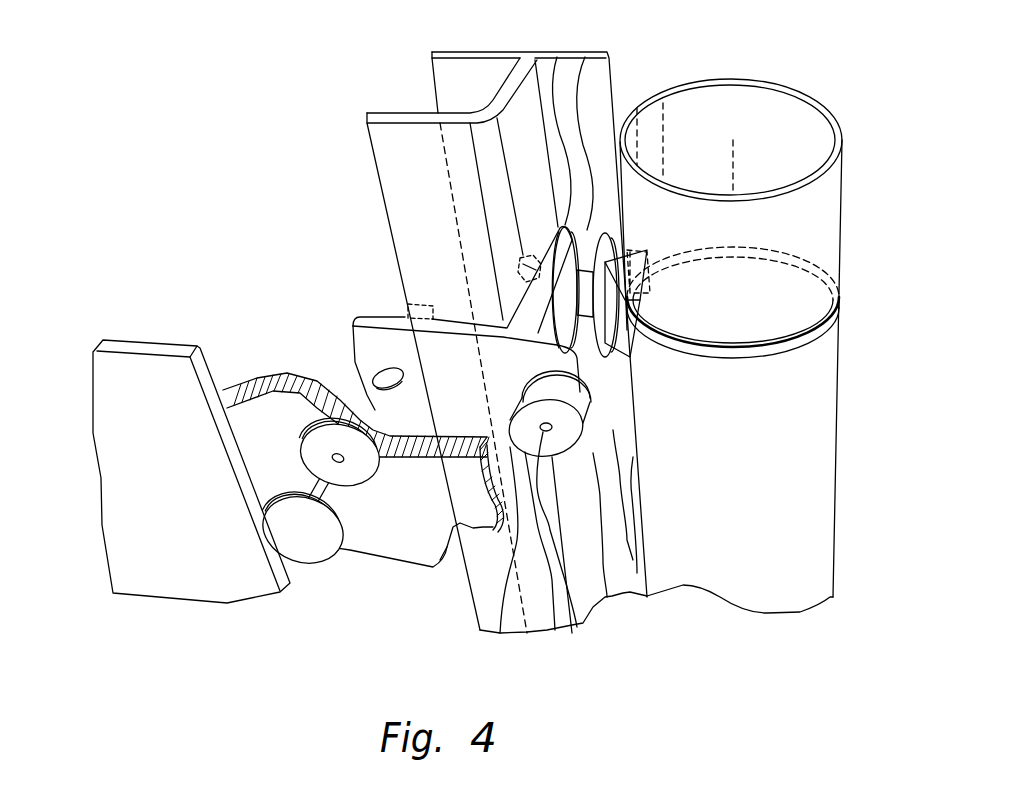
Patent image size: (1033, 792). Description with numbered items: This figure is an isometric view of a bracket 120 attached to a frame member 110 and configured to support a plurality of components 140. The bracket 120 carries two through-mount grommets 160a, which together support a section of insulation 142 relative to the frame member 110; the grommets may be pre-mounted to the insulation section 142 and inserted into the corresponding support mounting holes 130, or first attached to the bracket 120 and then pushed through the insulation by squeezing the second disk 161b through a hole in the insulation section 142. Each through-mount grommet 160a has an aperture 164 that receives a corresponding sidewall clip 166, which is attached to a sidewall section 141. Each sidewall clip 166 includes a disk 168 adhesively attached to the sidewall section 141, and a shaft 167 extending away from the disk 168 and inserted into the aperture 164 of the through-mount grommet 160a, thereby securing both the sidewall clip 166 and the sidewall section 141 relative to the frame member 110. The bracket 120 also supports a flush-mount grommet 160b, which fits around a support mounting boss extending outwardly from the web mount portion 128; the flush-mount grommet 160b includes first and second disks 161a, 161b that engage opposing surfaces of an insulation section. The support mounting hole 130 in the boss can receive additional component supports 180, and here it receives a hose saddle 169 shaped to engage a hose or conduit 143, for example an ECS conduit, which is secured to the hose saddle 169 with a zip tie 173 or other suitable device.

The frame member 110 is at (487, 52).
The bracket 120 is at (500, 640).
The web mount portion 128 is at (558, 60).
The support mounting hole 130 is at (380, 360).
The components 140 is at (247, 620).
The sidewall section 141 is at (117, 340).
The insulation section 142 is at (277, 372).
The hose or conduit 143 is at (840, 183).
The through-mount grommet 160a is at (610, 567).
The flush-mount grommet 160b is at (598, 214).
The first disk 161a is at (581, 66).
The second disk 161b is at (617, 258).
The aperture 164 is at (285, 479).
The sidewall clip 166 is at (225, 390).
The shaft 167 is at (337, 513).
The disk 168 is at (305, 545).
The hose saddle 169 is at (632, 372).
The zip tie 173 is at (828, 330).
The component supports 180 is at (601, 380).